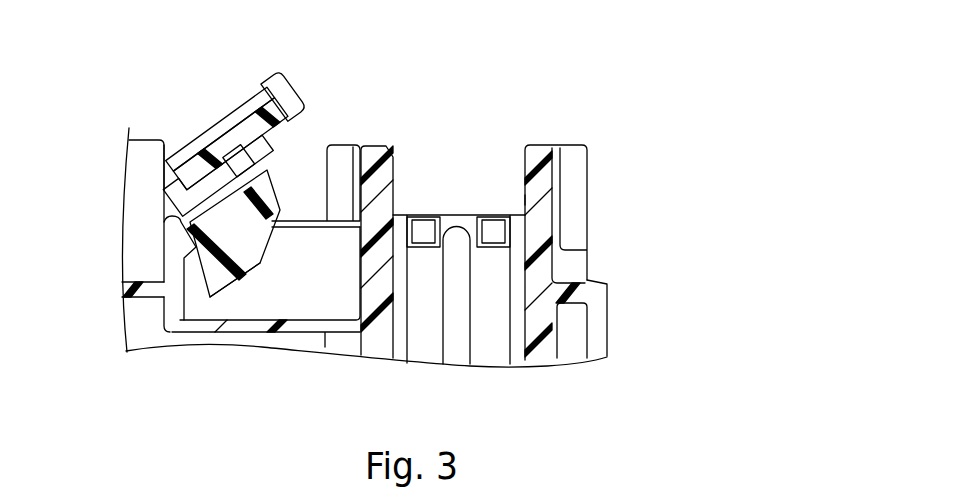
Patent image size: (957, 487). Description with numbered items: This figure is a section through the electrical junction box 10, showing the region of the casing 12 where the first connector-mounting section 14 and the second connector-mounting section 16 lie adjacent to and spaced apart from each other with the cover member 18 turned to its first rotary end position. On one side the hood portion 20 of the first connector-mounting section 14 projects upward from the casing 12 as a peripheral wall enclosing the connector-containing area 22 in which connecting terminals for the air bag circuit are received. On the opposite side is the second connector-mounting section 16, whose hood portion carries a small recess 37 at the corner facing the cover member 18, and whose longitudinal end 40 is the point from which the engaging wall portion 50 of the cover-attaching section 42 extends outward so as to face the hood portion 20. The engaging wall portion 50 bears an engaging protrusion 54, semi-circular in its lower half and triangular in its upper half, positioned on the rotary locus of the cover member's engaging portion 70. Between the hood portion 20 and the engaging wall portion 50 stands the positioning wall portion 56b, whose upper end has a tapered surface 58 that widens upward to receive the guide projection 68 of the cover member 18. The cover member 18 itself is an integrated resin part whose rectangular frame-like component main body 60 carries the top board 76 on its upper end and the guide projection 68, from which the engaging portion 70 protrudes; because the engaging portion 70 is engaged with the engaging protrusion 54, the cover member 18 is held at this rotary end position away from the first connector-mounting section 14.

The electrical junction box 10 is at (572, 42).
The casing 12 is at (604, 292).
The first connector-mounting section 14 is at (447, 241).
The second connector-mounting section 16 is at (200, 241).
The cover member 18 is at (208, 213).
The hood portion 20 is at (541, 182).
The connector-containing area 22 is at (522, 200).
The recess 37 is at (170, 148).
The longitudinal end 40 is at (132, 133).
The cover-attaching section 42 is at (276, 345).
The engaging wall portion 50 is at (177, 281).
The engaging protrusion 54 is at (182, 243).
The positioning wall portion 56b is at (300, 295).
The tapered surface 58 is at (315, 220).
The component main body 60 is at (258, 161).
The guide projection 68 is at (244, 248).
The engaging portion 70 is at (201, 270).
The top board 76 is at (253, 133).